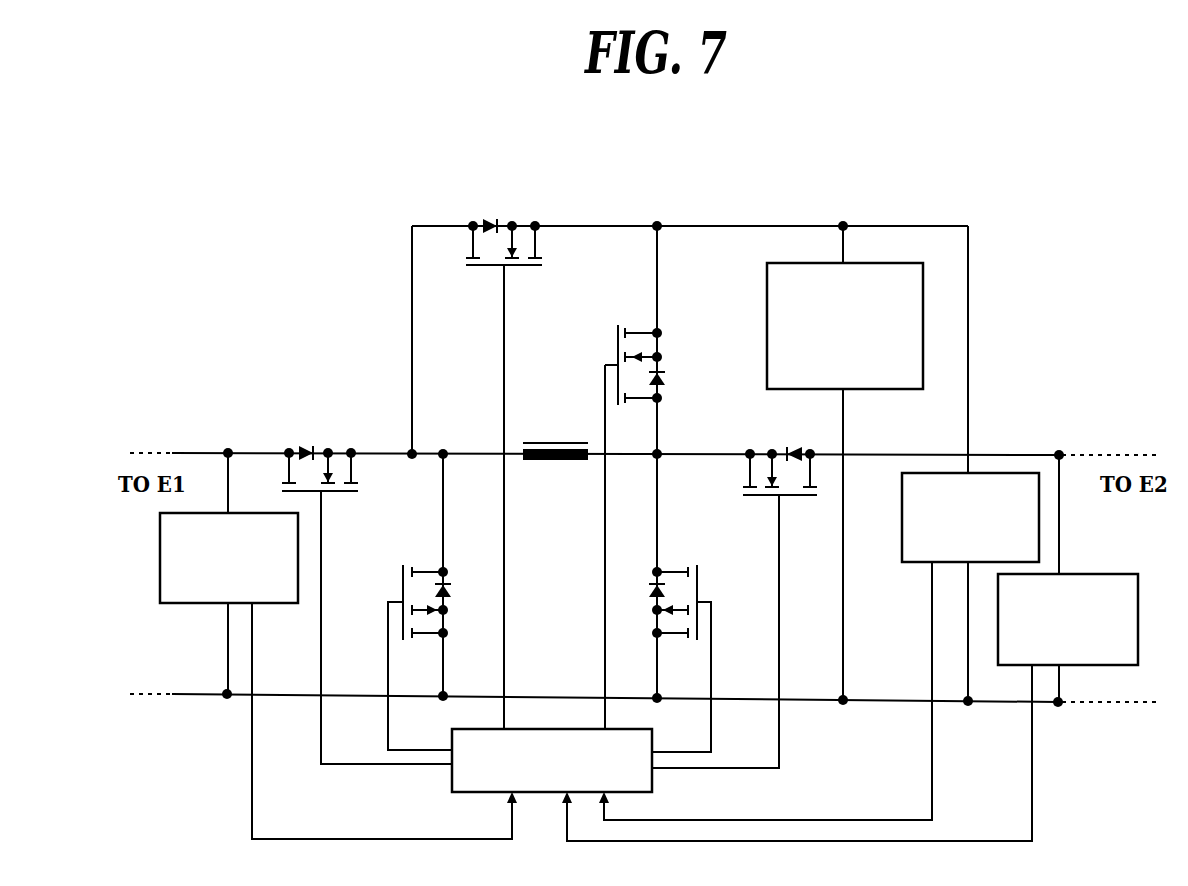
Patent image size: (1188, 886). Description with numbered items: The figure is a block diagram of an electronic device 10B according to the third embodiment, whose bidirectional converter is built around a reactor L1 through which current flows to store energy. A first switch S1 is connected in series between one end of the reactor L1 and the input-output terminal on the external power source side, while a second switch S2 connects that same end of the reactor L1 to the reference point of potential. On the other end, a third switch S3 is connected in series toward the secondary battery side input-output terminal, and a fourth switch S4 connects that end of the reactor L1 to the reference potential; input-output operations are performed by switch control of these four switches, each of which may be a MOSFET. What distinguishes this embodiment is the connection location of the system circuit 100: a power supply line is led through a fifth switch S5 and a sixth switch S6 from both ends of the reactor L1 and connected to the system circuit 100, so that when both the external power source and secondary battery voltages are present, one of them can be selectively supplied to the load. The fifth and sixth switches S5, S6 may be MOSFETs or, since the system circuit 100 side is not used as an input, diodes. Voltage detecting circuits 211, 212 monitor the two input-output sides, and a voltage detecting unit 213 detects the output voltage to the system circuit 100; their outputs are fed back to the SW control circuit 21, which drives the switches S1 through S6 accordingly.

The electronic device 10B is at (641, 191).
The system circuit 100 is at (767, 305).
The voltage detecting circuit 211 is at (190, 605).
The voltage detecting circuit 212 is at (1090, 666).
The voltage detecting circuit 213 is at (920, 564).
The SW control circuit 21 is at (543, 794).
The first switch S1 is at (367, 587).
The second switch S2 is at (420, 639).
The third switch S3 is at (734, 589).
The fourth switch S4 is at (680, 641).
The fifth switch S5 is at (635, 347).
The sixth switch S6 is at (487, 249).
The reactor L1 is at (555, 433).